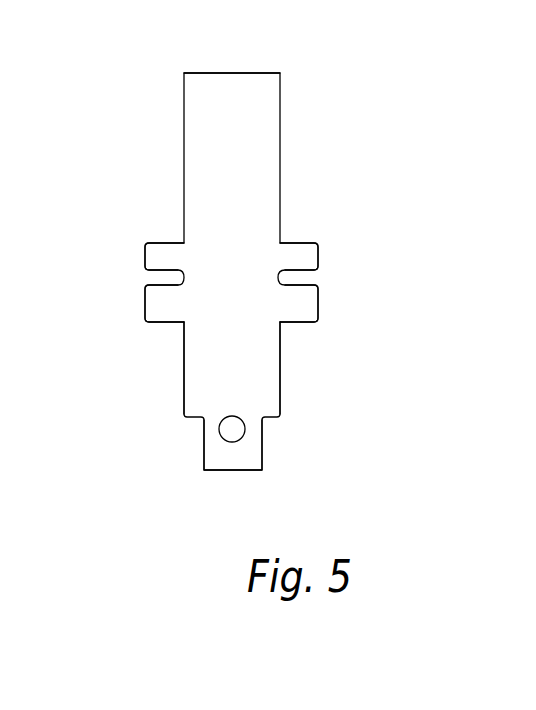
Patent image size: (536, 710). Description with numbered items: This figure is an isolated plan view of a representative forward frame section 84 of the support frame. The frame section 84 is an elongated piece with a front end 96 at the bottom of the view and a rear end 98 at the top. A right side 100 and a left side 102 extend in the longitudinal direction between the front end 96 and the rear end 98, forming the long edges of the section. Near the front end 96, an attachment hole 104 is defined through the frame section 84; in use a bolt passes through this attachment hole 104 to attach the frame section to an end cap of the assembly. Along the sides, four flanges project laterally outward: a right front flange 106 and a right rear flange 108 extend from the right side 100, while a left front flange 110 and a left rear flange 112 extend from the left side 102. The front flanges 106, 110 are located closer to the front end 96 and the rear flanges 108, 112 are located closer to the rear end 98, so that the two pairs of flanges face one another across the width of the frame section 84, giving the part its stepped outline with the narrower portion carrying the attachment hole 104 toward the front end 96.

The forward frame section 84 is at (372, 86).
The front end 96 is at (226, 470).
The rear end 98 is at (220, 73).
The right side 100 is at (280, 373).
The left side 102 is at (184, 390).
The attachment hole 104 is at (234, 427).
The right front flange 106 is at (318, 297).
The right rear flange 108 is at (318, 257).
The left front flange 110 is at (145, 297).
The left rear flange 112 is at (145, 256).